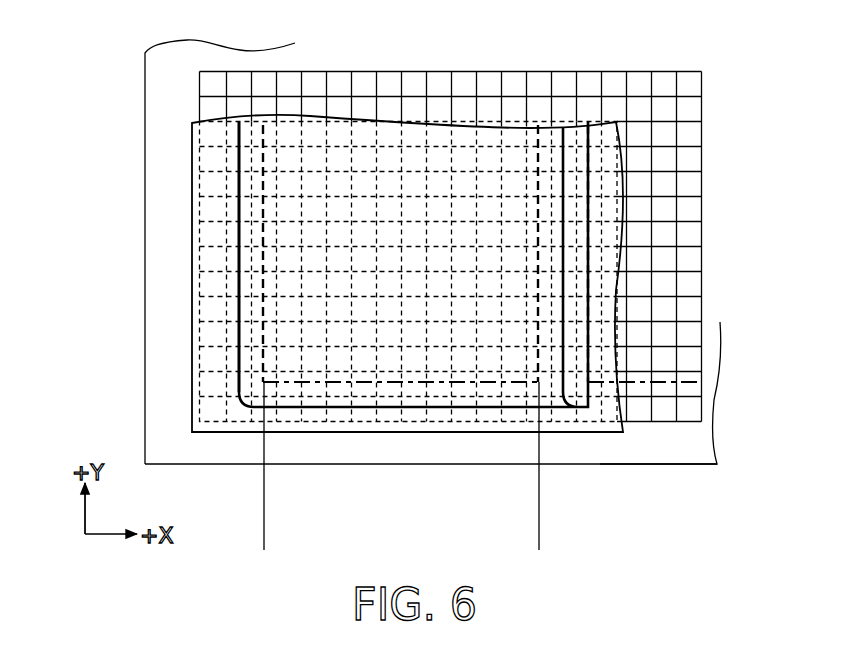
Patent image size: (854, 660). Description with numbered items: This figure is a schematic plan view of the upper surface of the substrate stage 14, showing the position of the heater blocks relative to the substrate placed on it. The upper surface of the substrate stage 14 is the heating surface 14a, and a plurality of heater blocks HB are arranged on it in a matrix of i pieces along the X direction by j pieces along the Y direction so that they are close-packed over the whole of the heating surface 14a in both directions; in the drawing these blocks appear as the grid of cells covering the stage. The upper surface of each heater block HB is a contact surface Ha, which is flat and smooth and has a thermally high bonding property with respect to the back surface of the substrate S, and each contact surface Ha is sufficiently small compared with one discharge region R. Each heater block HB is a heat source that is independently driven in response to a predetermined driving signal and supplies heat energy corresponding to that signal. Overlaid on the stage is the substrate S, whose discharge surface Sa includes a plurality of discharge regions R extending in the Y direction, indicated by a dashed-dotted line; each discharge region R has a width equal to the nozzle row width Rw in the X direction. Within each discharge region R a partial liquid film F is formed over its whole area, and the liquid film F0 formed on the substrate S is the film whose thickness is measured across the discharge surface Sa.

The substrate stage 14 is at (143, 137).
The heating surface 14a is at (653, 465).
The contact surface Ha is at (365, 73).
The heater block HB is at (438, 73).
The substrate S is at (192, 176).
The discharge surface Sa is at (200, 233).
The liquid film F0 is at (240, 282).
The partial liquid film F is at (312, 410).
The discharge region R is at (387, 385).
The nozzle row width Rw is at (539, 527).